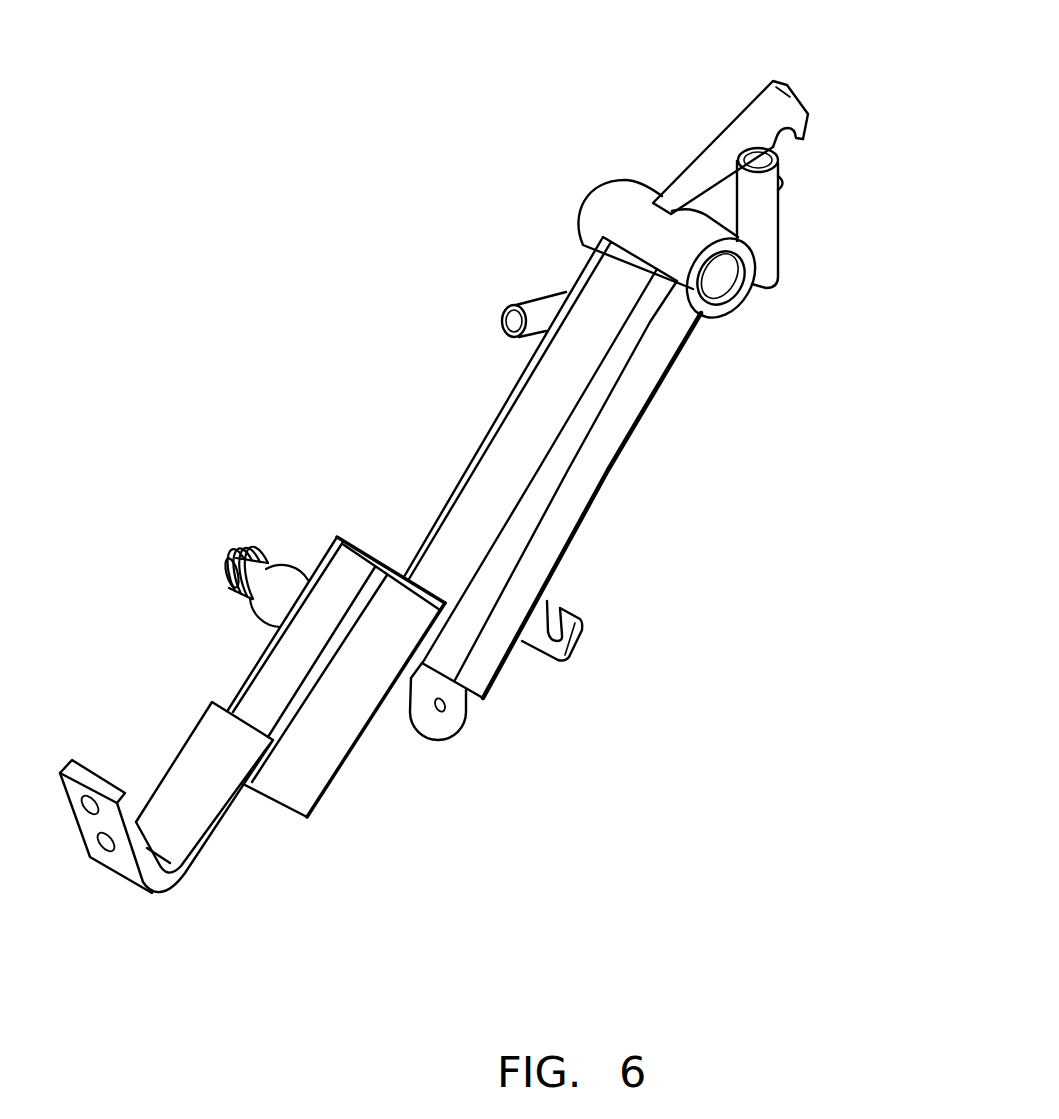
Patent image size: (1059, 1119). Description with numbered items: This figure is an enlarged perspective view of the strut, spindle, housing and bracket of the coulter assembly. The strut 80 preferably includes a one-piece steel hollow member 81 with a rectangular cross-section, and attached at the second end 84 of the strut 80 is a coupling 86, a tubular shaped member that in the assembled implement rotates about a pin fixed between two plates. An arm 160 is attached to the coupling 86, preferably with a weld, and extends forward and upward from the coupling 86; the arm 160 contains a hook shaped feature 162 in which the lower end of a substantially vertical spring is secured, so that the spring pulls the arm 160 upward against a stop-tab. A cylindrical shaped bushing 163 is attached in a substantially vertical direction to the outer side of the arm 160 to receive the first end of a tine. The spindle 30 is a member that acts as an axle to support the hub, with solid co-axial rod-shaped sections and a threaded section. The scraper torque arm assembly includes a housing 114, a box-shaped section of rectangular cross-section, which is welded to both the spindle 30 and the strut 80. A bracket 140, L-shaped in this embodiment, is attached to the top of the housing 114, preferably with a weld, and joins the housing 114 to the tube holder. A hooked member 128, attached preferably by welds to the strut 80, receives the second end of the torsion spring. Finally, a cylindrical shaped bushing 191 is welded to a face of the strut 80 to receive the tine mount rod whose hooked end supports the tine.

The spindle 30 is at (452, 722).
The strut 80 is at (482, 432).
The hollow member 81 is at (598, 463).
The second end 84 is at (630, 270).
The coupling 86 is at (595, 187).
The housing 114 is at (348, 762).
The hooked member 128 is at (578, 638).
The bracket 140 is at (188, 870).
The arm 160 is at (798, 97).
The hook shaped feature 162 is at (782, 142).
The bushing 163 is at (765, 240).
The bushing 191 is at (501, 318).